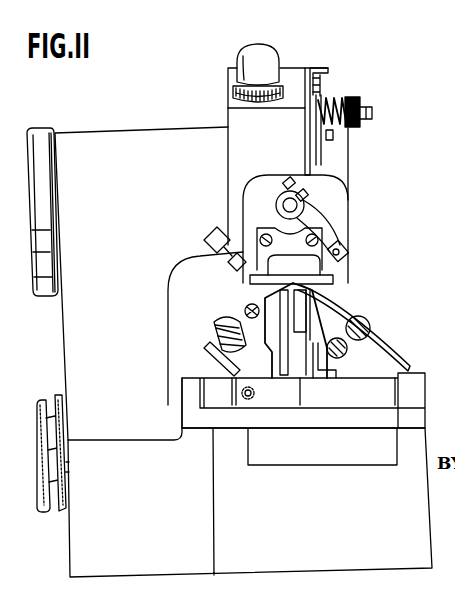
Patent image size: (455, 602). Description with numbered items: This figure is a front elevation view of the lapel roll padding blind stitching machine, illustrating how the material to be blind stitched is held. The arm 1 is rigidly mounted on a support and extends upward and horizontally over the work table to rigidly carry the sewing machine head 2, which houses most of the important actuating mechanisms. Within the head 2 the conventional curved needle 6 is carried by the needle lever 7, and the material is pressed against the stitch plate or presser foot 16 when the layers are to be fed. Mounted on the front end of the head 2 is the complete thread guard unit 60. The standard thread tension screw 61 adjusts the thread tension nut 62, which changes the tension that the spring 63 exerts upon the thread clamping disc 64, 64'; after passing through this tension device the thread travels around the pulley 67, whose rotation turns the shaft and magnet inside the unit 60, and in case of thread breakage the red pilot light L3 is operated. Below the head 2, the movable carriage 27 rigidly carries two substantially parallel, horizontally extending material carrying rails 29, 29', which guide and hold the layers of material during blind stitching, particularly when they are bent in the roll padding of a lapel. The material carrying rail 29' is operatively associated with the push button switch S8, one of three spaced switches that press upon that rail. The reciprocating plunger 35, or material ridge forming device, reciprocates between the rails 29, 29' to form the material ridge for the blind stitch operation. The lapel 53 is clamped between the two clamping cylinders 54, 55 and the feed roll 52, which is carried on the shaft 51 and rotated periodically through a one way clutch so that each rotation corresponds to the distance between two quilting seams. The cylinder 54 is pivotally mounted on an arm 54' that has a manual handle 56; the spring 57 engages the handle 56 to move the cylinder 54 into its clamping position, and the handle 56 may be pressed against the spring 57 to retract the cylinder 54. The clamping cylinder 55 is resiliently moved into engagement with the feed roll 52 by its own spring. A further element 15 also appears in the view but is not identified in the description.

The arm 1 is at (68, 334).
The sewing machine head 2 is at (228, 152).
The red pilot light L3 is at (250, 54).
The thread guard unit 60 is at (228, 100).
The thread clamping disc 64 is at (307, 107).
The thread clamping disc 64' is at (333, 77).
The spring 63 is at (335, 100).
The thread tension nut 62 is at (364, 100).
The thread tension screw 61 is at (372, 114).
The pulley 67 is at (321, 160).
The curved needle 6 is at (323, 217).
The needle lever 7 is at (342, 268).
The stitch plate or presser foot 16 is at (335, 280).
The push button switch S8 is at (240, 278).
The rod 15 is at (305, 299).
The plunger 35 is at (293, 327).
The lapel 53 is at (400, 362).
The clamping cylinder 55 is at (370, 322).
The shaft 51 is at (350, 352).
The material carrying rail 29 is at (329, 371).
The movable carriage 27 is at (384, 388).
The arm 54' is at (223, 392).
The material carrying rail 29' is at (271, 391).
The feed roll 52 is at (355, 392).
The clamping cylinder 54 is at (241, 305).
The manual handle 56 is at (215, 330).
The spring 57 is at (207, 351).